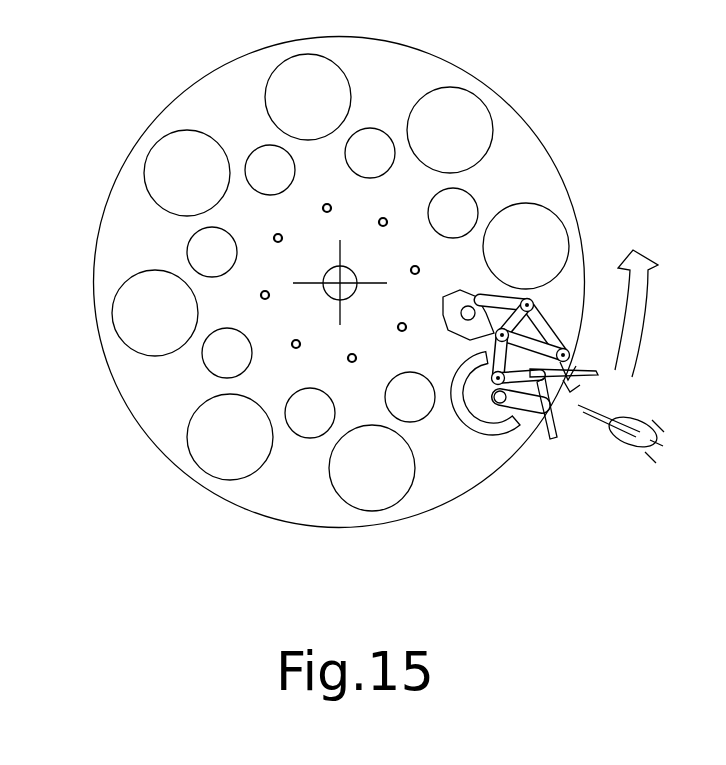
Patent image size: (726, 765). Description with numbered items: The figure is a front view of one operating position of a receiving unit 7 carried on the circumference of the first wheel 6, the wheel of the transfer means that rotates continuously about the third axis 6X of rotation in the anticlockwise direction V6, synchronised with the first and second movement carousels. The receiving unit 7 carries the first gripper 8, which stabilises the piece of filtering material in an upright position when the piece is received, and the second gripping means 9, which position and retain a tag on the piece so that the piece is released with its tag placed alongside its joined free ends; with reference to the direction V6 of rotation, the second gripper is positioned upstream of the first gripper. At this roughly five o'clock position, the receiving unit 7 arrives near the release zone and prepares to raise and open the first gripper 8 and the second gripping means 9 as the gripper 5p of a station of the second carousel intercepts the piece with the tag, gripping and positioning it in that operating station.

The first wheel 6 is at (527, 175).
The third axis of rotation 6X is at (343, 277).
The first gripper 8 is at (592, 349).
The second gripping means 9 is at (515, 435).
The receiving unit 7 is at (547, 440).
The direction of rotation of the first wheel V6 is at (650, 327).
The gripper of the second carousel 5p is at (658, 415).